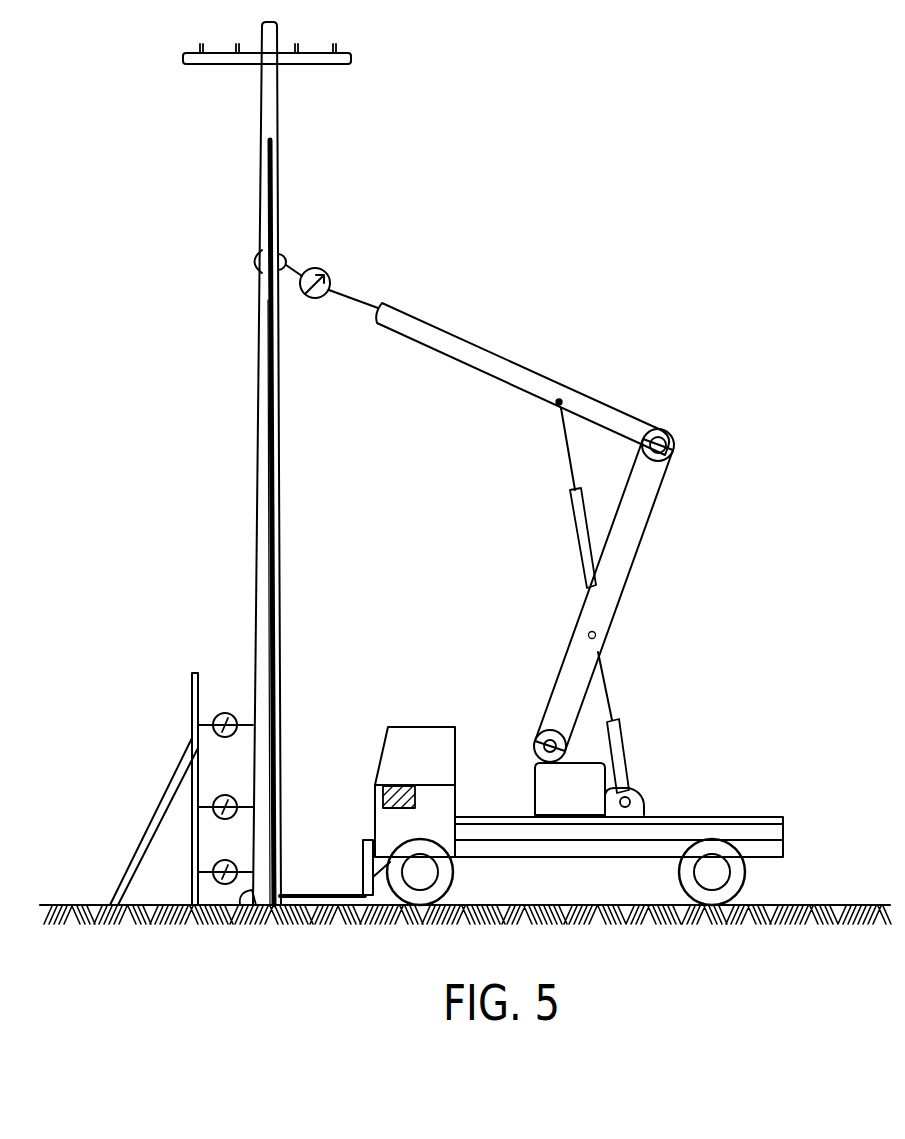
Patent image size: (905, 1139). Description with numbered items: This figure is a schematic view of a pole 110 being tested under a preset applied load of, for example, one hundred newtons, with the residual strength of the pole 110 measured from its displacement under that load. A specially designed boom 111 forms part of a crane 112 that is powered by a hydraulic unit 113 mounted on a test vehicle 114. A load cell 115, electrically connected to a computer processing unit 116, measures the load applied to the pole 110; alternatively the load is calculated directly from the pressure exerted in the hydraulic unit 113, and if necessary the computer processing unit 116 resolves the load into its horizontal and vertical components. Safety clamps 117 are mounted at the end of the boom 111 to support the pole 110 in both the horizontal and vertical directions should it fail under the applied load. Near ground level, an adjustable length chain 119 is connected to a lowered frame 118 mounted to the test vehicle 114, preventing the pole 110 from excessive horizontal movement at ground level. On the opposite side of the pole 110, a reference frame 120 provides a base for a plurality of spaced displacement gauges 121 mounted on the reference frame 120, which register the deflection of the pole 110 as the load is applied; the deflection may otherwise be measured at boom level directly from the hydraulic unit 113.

The pole 110 is at (260, 430).
The boom 111 is at (348, 292).
The crane 112 is at (618, 553).
The hydraulic unit 113 is at (581, 803).
The test vehicle 114 is at (752, 815).
The load cell 115 is at (310, 299).
The computer processing unit 116 is at (380, 791).
The safety clamps 117 is at (259, 273).
The lowered frame 118 is at (364, 845).
The adjustable length chain 119 is at (335, 888).
The reference frame 120 is at (135, 842).
The displacement gauges 121 is at (230, 712).